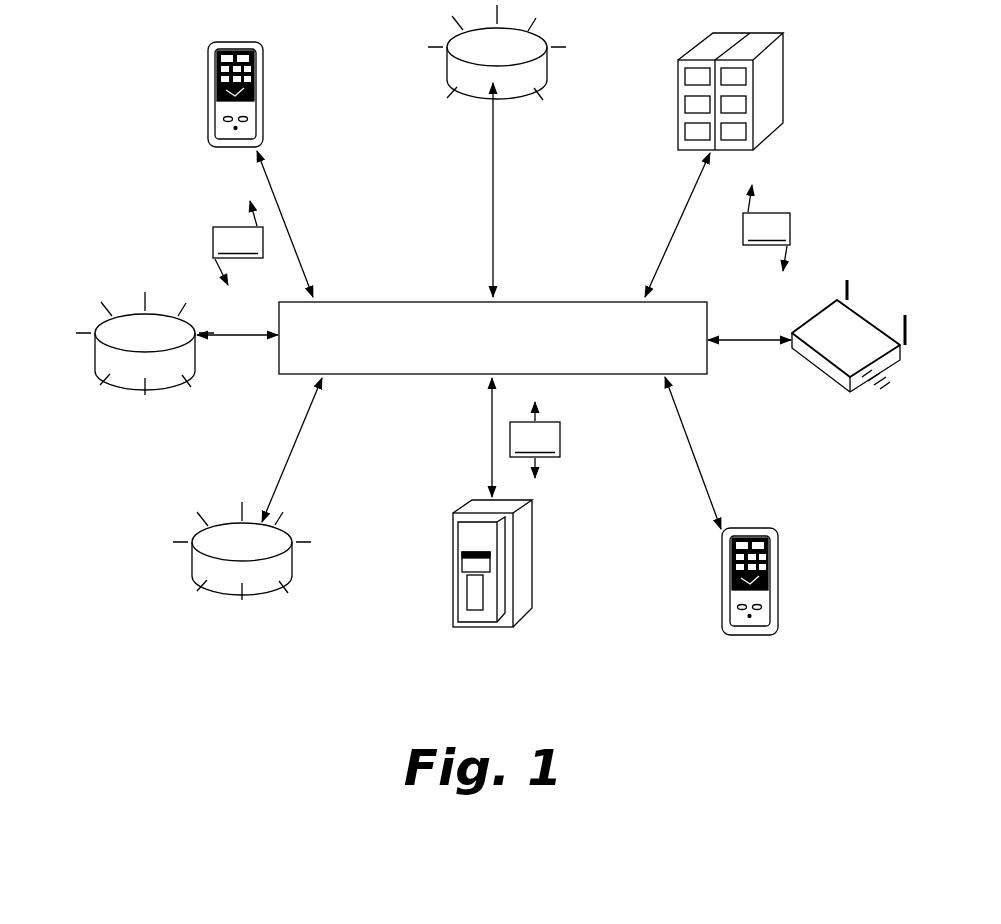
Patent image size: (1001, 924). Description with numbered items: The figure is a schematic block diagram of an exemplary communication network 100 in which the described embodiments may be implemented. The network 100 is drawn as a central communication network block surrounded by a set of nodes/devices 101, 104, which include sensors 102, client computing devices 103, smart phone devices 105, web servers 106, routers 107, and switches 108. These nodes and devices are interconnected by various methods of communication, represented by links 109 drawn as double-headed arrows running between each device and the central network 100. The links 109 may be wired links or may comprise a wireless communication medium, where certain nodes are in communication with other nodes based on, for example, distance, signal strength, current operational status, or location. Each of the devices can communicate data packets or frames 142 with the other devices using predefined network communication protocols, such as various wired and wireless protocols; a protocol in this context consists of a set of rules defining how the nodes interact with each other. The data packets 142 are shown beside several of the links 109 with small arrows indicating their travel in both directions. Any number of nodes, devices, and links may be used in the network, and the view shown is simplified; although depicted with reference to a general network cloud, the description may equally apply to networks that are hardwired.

The communication network 100 is at (605, 300).
The node/device 101 is at (207, 55).
The sensor 102 is at (521, 92).
The client computing device 103 is at (784, 69).
The node/device 104 is at (834, 385).
The smart phone device 105 is at (745, 638).
The web server 106 is at (453, 515).
The router 107 is at (188, 568).
The switch 108 is at (92, 358).
The link 109 is at (292, 232).
The data packet 142 is at (501, 331).